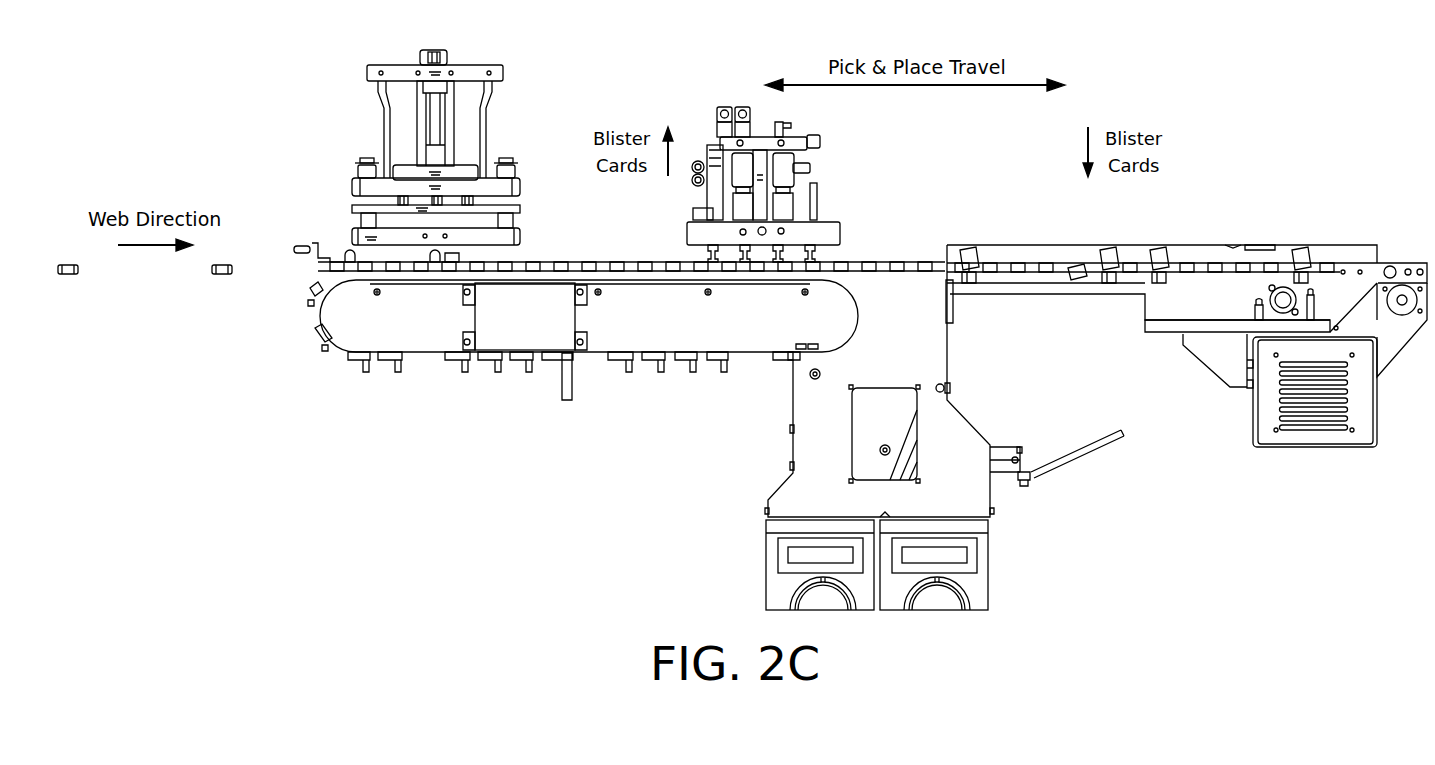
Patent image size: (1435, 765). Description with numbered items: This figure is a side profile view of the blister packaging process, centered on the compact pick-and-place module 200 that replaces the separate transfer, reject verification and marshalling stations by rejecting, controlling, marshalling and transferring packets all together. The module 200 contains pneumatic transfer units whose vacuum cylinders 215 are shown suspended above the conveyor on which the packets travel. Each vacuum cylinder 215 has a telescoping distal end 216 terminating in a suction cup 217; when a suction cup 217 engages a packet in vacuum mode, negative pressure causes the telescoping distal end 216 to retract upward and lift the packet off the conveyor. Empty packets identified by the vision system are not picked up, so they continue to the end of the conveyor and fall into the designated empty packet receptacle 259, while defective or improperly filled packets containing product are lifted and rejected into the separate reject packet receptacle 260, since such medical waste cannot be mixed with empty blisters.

The pick-and-place module 200 is at (855, 188).
The vacuum cylinder 215 is at (862, 244).
The telescoping distal end 216 is at (690, 260).
The suction cup 217 is at (778, 258).
The empty packet receptacle 259 is at (778, 585).
The reject packet receptacle 260 is at (975, 583).